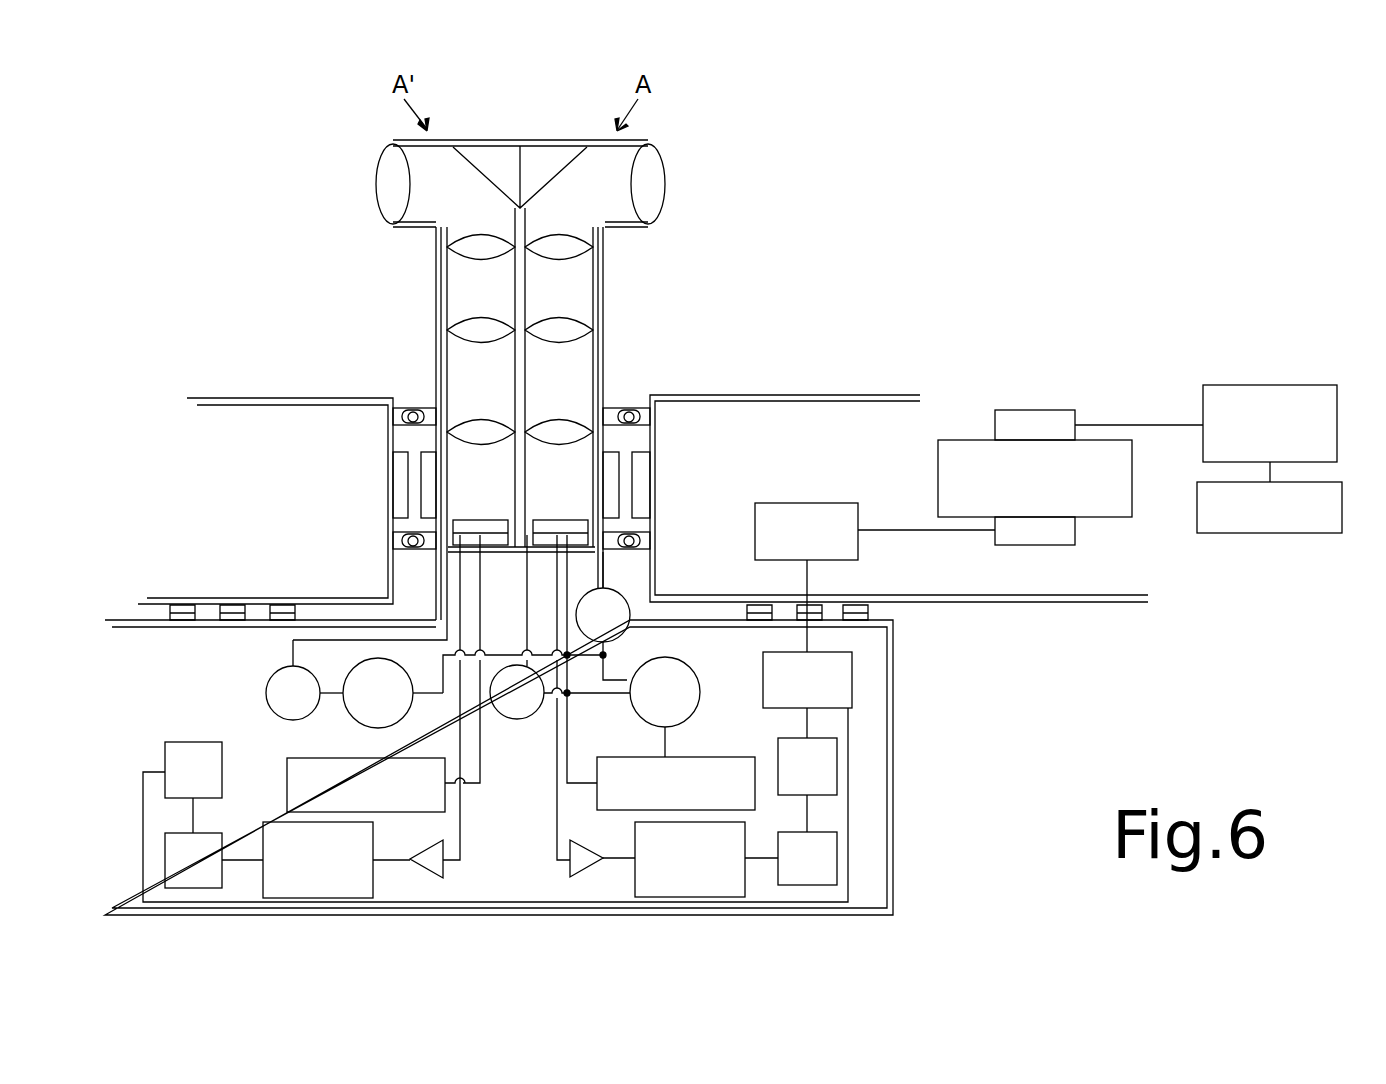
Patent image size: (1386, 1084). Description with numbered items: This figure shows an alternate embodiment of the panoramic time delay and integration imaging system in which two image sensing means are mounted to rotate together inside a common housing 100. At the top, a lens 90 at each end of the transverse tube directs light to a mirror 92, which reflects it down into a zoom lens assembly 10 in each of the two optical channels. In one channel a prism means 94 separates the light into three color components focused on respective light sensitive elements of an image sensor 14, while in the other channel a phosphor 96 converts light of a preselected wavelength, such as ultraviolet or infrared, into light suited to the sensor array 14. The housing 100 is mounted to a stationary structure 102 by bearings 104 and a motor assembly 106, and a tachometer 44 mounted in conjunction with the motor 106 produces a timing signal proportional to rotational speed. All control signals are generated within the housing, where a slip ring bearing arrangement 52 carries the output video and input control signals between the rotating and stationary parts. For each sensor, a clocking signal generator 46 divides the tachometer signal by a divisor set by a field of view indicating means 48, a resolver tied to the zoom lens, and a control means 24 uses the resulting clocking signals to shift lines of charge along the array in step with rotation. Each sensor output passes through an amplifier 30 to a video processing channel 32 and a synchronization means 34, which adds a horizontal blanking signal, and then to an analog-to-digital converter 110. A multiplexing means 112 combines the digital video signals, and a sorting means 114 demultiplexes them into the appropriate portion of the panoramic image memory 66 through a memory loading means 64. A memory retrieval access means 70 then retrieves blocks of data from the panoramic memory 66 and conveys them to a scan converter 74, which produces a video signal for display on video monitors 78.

The lens assembly 10 is at (595, 322).
The image sensor 14 is at (538, 549).
The control means 24 is at (365, 757).
The amplifier 30 is at (570, 865).
The video processing channel 32 is at (263, 838).
The synchronization means 34 is at (501, 860).
The tachometer 44 is at (612, 593).
The clocking signal generator 46 is at (419, 757).
The field of view indicating means 48 is at (274, 716).
The slip ring bearing arrangement 52 is at (885, 607).
The memory loading means 64 is at (1020, 546).
The panoramic image memory 66 is at (937, 480).
The memory retrieval access means 70 is at (1012, 410).
The scan converter 74 is at (1250, 385).
The video monitors 78 is at (1245, 534).
The lens 90 is at (376, 186).
The mirror 92 is at (489, 180).
The prism means 94 is at (565, 521).
The phosphor 96 is at (480, 521).
The housing 100 is at (440, 318).
The stationary structure 102 is at (315, 397).
The bearings 104 is at (410, 407).
The motor assembly 106 is at (628, 452).
The analog-to-digital converter 110 is at (190, 741).
The multiplexing means 112 is at (852, 680).
The sorting means 114 is at (833, 503).